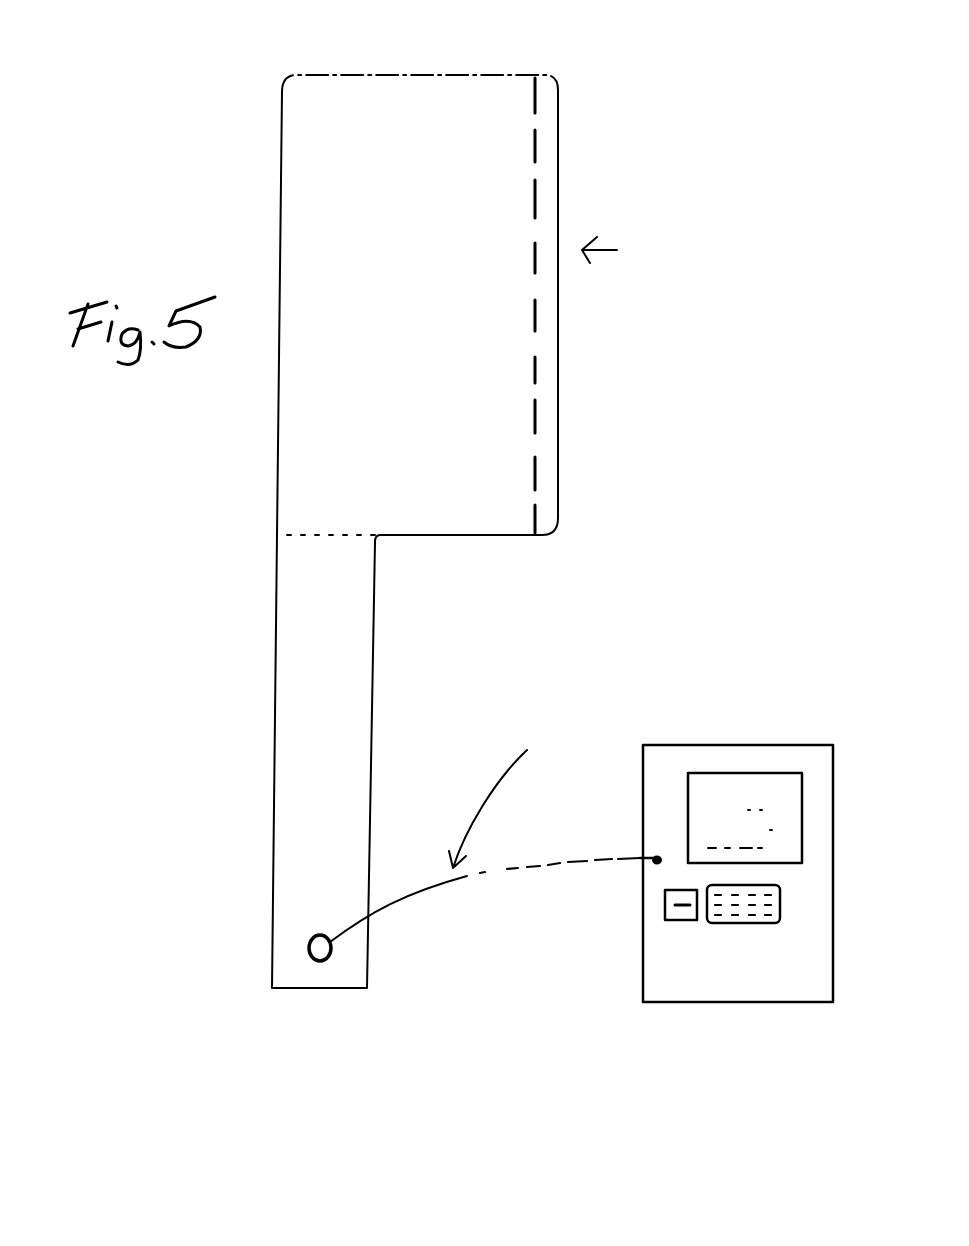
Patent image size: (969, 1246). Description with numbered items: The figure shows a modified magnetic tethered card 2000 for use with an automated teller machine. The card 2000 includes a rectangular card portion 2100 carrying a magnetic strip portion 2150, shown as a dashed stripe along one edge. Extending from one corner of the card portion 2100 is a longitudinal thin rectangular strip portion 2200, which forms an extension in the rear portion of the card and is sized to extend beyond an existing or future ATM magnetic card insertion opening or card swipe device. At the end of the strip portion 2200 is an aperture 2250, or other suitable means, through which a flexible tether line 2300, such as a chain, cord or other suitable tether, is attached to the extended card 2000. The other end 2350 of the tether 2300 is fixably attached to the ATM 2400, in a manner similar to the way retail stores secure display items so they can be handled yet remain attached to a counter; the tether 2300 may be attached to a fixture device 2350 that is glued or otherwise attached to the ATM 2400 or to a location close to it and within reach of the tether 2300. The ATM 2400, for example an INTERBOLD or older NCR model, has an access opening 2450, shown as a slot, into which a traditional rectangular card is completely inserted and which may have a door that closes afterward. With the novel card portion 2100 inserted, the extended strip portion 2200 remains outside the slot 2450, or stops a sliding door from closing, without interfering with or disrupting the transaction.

The modified magnetic tethered card 2000 is at (157, 135).
The rectangular card portion 2100 is at (448, 112).
The magnetic strip portion 2150 is at (547, 125).
The longitudinal thin rectangular strip portion 2200 is at (307, 738).
The aperture 2250 is at (318, 968).
The flexible tether line 2300 is at (463, 885).
The fixture device 2350 is at (647, 851).
The ATM (automated teller machine) 2400 is at (785, 667).
The access opening 2450 is at (683, 920).